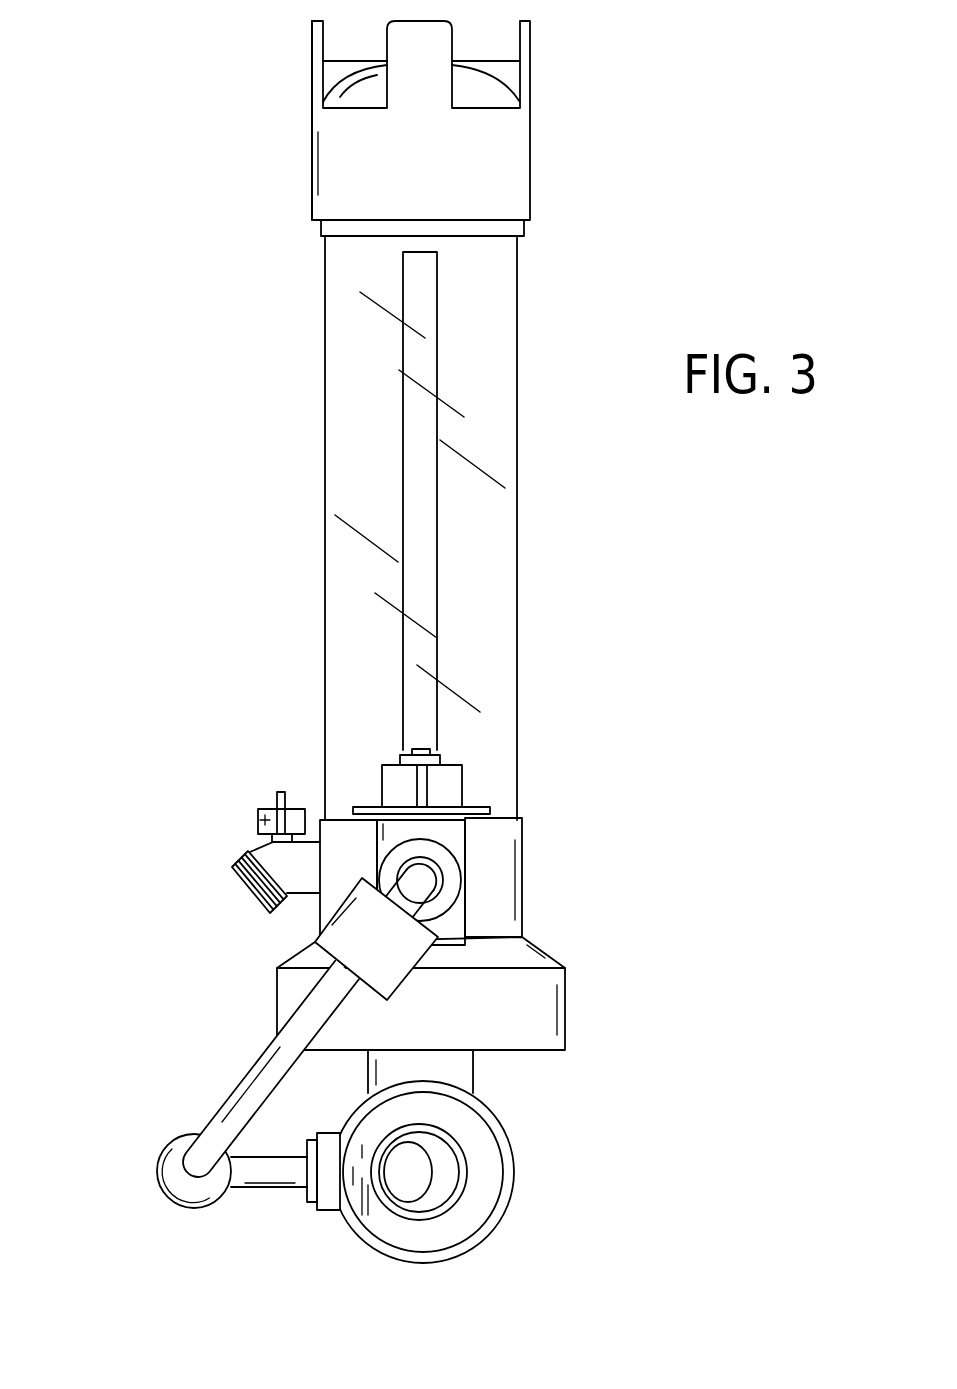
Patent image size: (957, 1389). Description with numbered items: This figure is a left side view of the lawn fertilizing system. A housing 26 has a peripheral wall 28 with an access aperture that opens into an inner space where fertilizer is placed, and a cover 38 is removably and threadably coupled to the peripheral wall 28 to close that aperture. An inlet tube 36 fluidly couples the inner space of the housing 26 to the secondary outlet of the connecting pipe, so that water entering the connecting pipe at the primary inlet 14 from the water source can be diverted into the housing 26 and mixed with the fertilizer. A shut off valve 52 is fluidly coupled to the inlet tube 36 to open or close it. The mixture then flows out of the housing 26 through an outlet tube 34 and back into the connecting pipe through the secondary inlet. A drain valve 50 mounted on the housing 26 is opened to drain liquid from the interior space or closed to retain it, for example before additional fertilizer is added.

The cover 38 is at (510, 142).
The outlet tube 34 is at (438, 608).
The shut off valve 52 is at (427, 787).
The peripheral wall 28 is at (523, 878).
The drain valve 50 is at (258, 821).
The housing 26 is at (565, 1048).
The inlet tube 36 is at (195, 1167).
The primary inlet 14 is at (477, 1232).